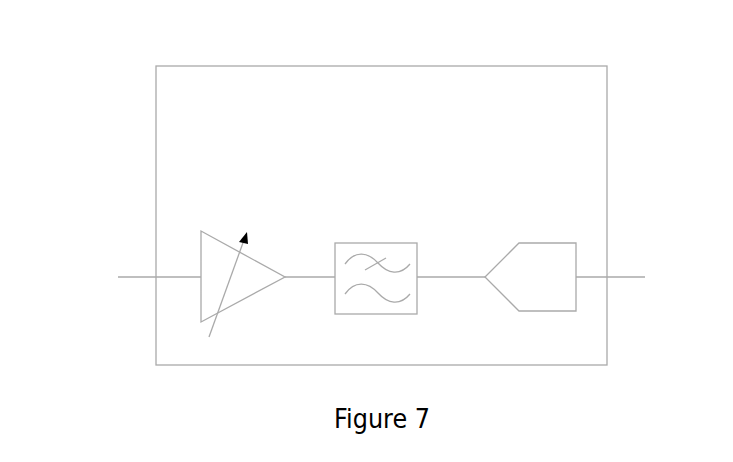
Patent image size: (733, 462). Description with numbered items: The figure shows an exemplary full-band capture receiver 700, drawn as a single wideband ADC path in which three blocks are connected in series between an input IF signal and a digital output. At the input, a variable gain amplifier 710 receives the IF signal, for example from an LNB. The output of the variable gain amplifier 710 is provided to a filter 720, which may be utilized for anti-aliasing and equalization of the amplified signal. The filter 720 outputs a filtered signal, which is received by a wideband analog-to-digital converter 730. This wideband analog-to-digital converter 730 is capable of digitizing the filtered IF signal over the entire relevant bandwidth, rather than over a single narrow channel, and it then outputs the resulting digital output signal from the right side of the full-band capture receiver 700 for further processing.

The full-band capture receiver 700 is at (94, 75).
The variable gain amplifier 710 is at (199, 243).
The filter 720 is at (380, 243).
The wideband analog-to-digital converter 730 is at (546, 243).